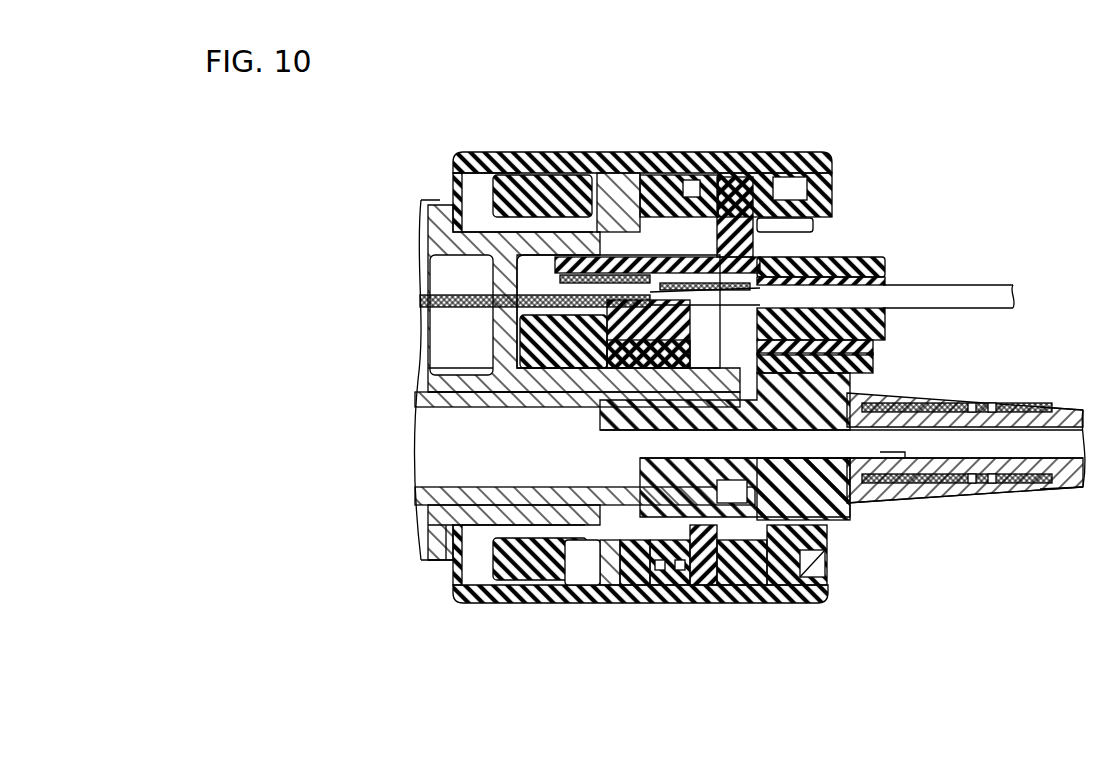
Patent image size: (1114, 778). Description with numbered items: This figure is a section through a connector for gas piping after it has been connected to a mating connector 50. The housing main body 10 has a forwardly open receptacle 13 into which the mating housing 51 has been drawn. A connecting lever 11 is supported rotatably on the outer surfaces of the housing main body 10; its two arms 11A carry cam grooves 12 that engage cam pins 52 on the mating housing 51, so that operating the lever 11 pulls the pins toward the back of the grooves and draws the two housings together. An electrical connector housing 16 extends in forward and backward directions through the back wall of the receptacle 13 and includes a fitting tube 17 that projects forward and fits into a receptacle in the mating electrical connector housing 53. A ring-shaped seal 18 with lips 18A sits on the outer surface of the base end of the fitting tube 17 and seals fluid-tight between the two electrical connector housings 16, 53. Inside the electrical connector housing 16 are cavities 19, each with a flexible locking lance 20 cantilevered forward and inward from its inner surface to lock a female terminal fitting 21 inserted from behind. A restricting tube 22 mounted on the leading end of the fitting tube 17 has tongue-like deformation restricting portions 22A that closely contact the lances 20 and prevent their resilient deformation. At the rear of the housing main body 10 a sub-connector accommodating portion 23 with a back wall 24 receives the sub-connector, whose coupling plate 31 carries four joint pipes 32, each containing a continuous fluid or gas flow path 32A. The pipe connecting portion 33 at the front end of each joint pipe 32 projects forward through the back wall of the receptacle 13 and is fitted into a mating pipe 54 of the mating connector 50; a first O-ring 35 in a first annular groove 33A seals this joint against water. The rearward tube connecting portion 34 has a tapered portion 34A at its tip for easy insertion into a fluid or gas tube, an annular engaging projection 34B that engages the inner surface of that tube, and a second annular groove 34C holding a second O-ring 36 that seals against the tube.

The housing main body 10 is at (745, 150).
The connecting lever 11 is at (525, 600).
The arms 11A is at (529, 195).
The cam groove 12 is at (590, 190).
The receptacle 13 is at (505, 172).
The electrical connector housing 16 is at (847, 259).
The fitting tube 17 is at (600, 405).
The ring-shaped seal 18 is at (722, 235).
The lips 18A is at (645, 410).
The cavities 19 is at (878, 285).
The flexible locking lance 20 is at (800, 257).
The female terminal fitting 21 is at (612, 262).
The restricting tube 22 is at (517, 338).
The deformation restricting portions 22A is at (660, 368).
The sub-connector accommodating portion 23 is at (798, 595).
The back wall 24 is at (758, 585).
The coupling plate 31 is at (836, 525).
The joint pipe 32 is at (850, 505).
The fluid or gas flow path 32A is at (893, 453).
The pipe connecting portion 33 is at (723, 560).
The first annular groove 33A is at (583, 547).
The tube connecting portion 34 is at (943, 395).
The tapered portion 34A is at (1030, 468).
The annular engaging projection 34B is at (917, 402).
The second annular groove 34C is at (993, 470).
The first O-ring 35 is at (671, 585).
The second O-ring 36 is at (1012, 402).
The mating connector 50 is at (424, 236).
The mating housing 51 is at (424, 378).
The cam pins 52 is at (624, 203).
The mating electrical connector housing 53 is at (674, 240).
The mating pipe 54 is at (437, 495).